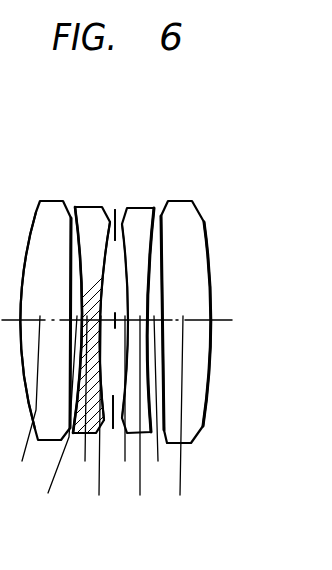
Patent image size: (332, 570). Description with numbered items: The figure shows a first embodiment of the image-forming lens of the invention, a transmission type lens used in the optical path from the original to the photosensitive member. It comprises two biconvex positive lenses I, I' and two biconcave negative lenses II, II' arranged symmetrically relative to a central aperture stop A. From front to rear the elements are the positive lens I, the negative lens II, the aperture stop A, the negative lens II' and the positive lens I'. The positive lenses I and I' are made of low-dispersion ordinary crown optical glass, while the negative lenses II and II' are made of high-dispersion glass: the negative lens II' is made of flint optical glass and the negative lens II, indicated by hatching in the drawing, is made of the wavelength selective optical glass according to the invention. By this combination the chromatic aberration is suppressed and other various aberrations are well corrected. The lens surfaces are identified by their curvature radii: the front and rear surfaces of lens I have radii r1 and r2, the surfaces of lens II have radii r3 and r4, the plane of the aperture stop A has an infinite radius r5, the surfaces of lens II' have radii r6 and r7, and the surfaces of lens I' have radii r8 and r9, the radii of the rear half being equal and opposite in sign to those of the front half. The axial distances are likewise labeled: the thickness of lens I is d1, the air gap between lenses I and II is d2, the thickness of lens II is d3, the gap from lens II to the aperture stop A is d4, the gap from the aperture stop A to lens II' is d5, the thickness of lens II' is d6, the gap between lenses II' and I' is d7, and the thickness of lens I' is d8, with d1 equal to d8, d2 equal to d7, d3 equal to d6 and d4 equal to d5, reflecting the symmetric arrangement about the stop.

The biconvex lens I is at (45, 259).
The biconcave negative lens II is at (166, 259).
The biconcave negative lens II' is at (138, 254).
The biconvex lens I' is at (186, 259).
The aperture stop A is at (113, 428).
The curvature radius r1 is at (29, 235).
The curvature radius r2 is at (70, 226).
The curvature radius r3 is at (78, 207).
The curvature radius r4 is at (102, 207).
The curvature radius r5 is at (115, 210).
The curvature radius r6 is at (123, 207).
The curvature radius r7 is at (153, 208).
The curvature radius r8 is at (167, 201).
The curvature radius r9 is at (204, 225).
The distance d1 is at (25, 401).
The distance d2 is at (53, 418).
The distance d3 is at (82, 401).
The distance d4 is at (100, 418).
The distance d5 is at (123, 401).
The distance d6 is at (138, 418).
The distance d7 is at (158, 401).
The distance d8 is at (177, 418).